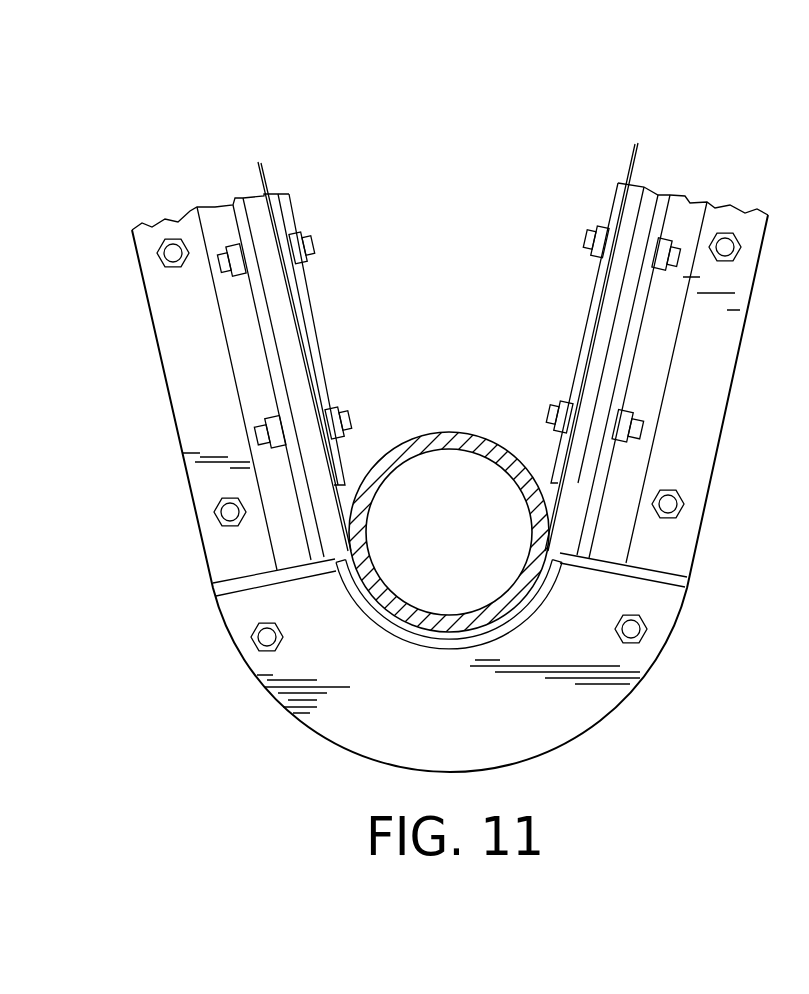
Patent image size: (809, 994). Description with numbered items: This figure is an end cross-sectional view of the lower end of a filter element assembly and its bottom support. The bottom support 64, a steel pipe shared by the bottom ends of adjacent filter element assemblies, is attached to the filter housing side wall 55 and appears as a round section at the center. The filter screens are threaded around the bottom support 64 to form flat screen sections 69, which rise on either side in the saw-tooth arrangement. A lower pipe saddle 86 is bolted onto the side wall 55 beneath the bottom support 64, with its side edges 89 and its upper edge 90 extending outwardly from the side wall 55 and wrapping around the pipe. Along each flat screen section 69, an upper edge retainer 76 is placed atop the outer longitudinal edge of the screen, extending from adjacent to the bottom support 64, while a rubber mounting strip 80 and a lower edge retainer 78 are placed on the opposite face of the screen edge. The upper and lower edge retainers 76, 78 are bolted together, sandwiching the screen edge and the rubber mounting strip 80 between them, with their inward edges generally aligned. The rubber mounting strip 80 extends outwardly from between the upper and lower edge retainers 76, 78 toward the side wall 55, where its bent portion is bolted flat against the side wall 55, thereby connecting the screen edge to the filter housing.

The side wall 55 is at (723, 716).
The bottom support 64 is at (437, 613).
The flat screen section 69 is at (263, 183).
The upper edge retainer 76 is at (308, 298).
The lower edge retainer 78 is at (268, 368).
The rubber mounting strip 80 is at (281, 328).
The lower pipe saddle 86 is at (473, 711).
The side edges 89 is at (313, 577).
The upper edge 90 is at (407, 634).